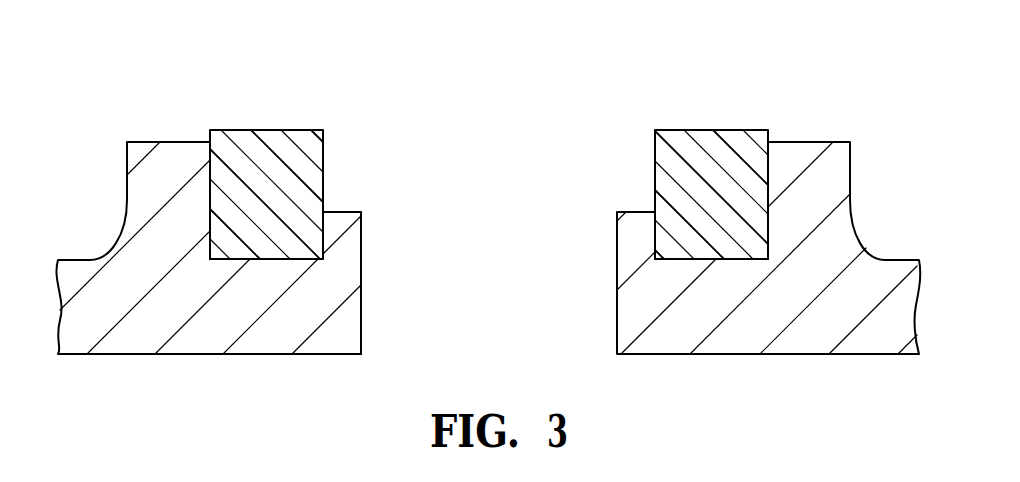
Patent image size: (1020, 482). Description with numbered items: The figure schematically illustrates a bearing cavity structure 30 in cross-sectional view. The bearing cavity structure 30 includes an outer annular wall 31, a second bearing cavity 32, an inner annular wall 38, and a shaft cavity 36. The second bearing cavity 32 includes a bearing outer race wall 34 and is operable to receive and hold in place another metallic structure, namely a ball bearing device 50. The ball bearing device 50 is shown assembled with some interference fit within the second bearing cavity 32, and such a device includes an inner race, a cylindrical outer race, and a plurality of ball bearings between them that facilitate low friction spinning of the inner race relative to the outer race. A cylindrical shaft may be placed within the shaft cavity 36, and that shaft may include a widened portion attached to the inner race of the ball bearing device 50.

The bearing cavity structure 30 is at (850, 182).
The outer annular wall 31 is at (165, 142).
The second bearing cavity 32 is at (770, 140).
The bearing outer race wall 34 is at (210, 193).
The shaft cavity 36 is at (492, 255).
The inner annular wall 38 is at (342, 212).
The ball bearing device 50 is at (707, 128).